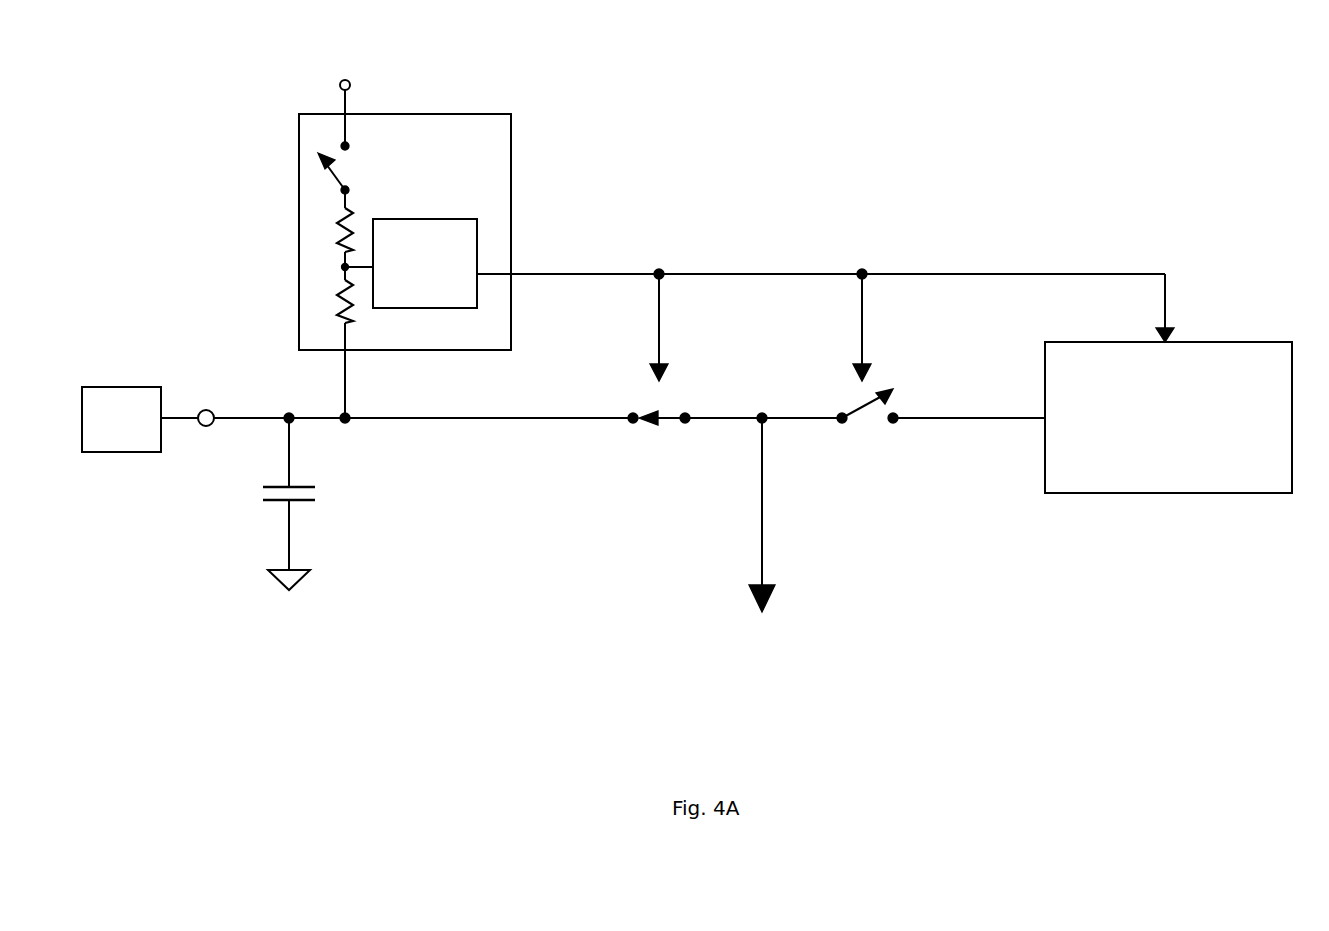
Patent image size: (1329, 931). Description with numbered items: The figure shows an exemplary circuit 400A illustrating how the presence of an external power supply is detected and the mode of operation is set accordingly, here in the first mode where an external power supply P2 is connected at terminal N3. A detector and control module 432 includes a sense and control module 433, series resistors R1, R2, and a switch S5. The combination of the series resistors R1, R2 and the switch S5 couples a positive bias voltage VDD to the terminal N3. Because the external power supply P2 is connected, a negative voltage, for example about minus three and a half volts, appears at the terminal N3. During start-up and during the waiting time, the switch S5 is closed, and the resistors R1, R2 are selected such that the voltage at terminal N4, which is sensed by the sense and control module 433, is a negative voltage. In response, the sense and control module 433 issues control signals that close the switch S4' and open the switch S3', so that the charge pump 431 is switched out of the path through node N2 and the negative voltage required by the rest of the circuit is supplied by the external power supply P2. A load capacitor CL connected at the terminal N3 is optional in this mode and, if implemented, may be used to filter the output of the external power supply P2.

The circuit 400A is at (326, 711).
The charge pump 431 is at (1268, 342).
The detector and control module 432 is at (478, 114).
The sense and control module 433 is at (462, 219).
The positive bias voltage VDD is at (345, 101).
The switch S5 is at (345, 173).
The resistor R1 is at (330, 221).
The resistor R2 is at (331, 349).
The terminal N4 is at (341, 266).
The terminal N3 is at (206, 404).
The node N2 is at (763, 497).
The external power supply P2 is at (121, 419).
The load capacitor CL is at (306, 504).
The switch S4' is at (659, 431).
The switch S3' is at (941, 420).